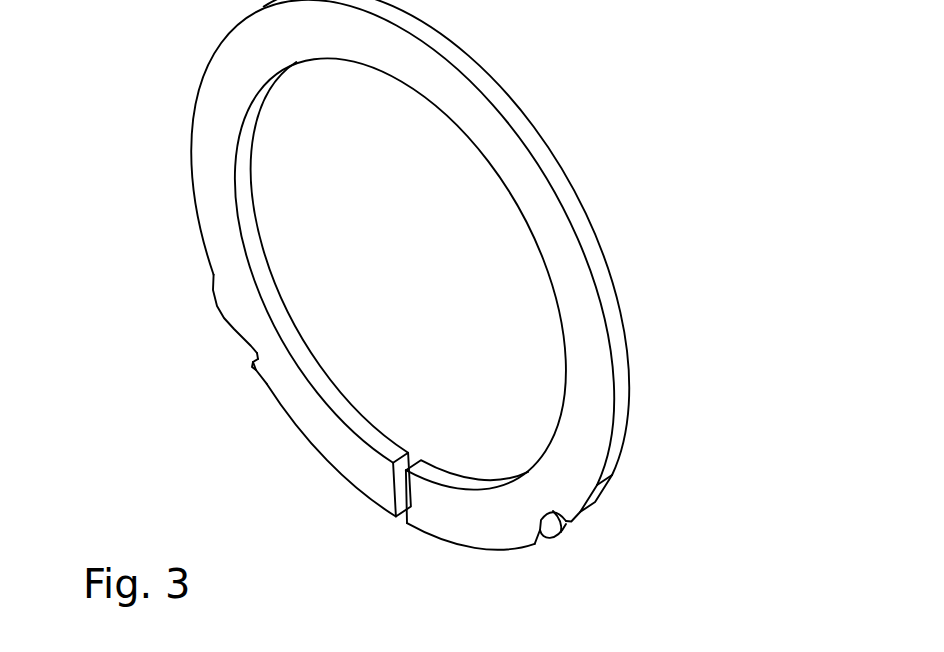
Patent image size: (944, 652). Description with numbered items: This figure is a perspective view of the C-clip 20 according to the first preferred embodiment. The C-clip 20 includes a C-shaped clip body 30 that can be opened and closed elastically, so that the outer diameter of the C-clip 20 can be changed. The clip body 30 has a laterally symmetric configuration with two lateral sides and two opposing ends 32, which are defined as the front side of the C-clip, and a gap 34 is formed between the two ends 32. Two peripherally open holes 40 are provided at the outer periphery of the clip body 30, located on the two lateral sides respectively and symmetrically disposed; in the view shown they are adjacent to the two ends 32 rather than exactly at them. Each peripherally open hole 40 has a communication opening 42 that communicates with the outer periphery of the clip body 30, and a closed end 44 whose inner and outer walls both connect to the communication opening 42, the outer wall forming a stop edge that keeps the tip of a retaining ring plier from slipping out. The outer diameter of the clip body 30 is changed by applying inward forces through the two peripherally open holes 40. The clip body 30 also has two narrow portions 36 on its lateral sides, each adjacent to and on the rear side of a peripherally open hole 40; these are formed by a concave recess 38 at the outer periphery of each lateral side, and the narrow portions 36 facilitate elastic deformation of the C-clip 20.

The C-clip 20 is at (580, 130).
The clip body 30 is at (568, 261).
The ends 32 is at (393, 485).
The gap 34 is at (404, 523).
The narrow portions 36 is at (235, 268).
The recess 38 is at (593, 487).
The peripherally open holes 40 is at (233, 352).
The communication opening 42 is at (237, 335).
The closed end 44 is at (260, 353).